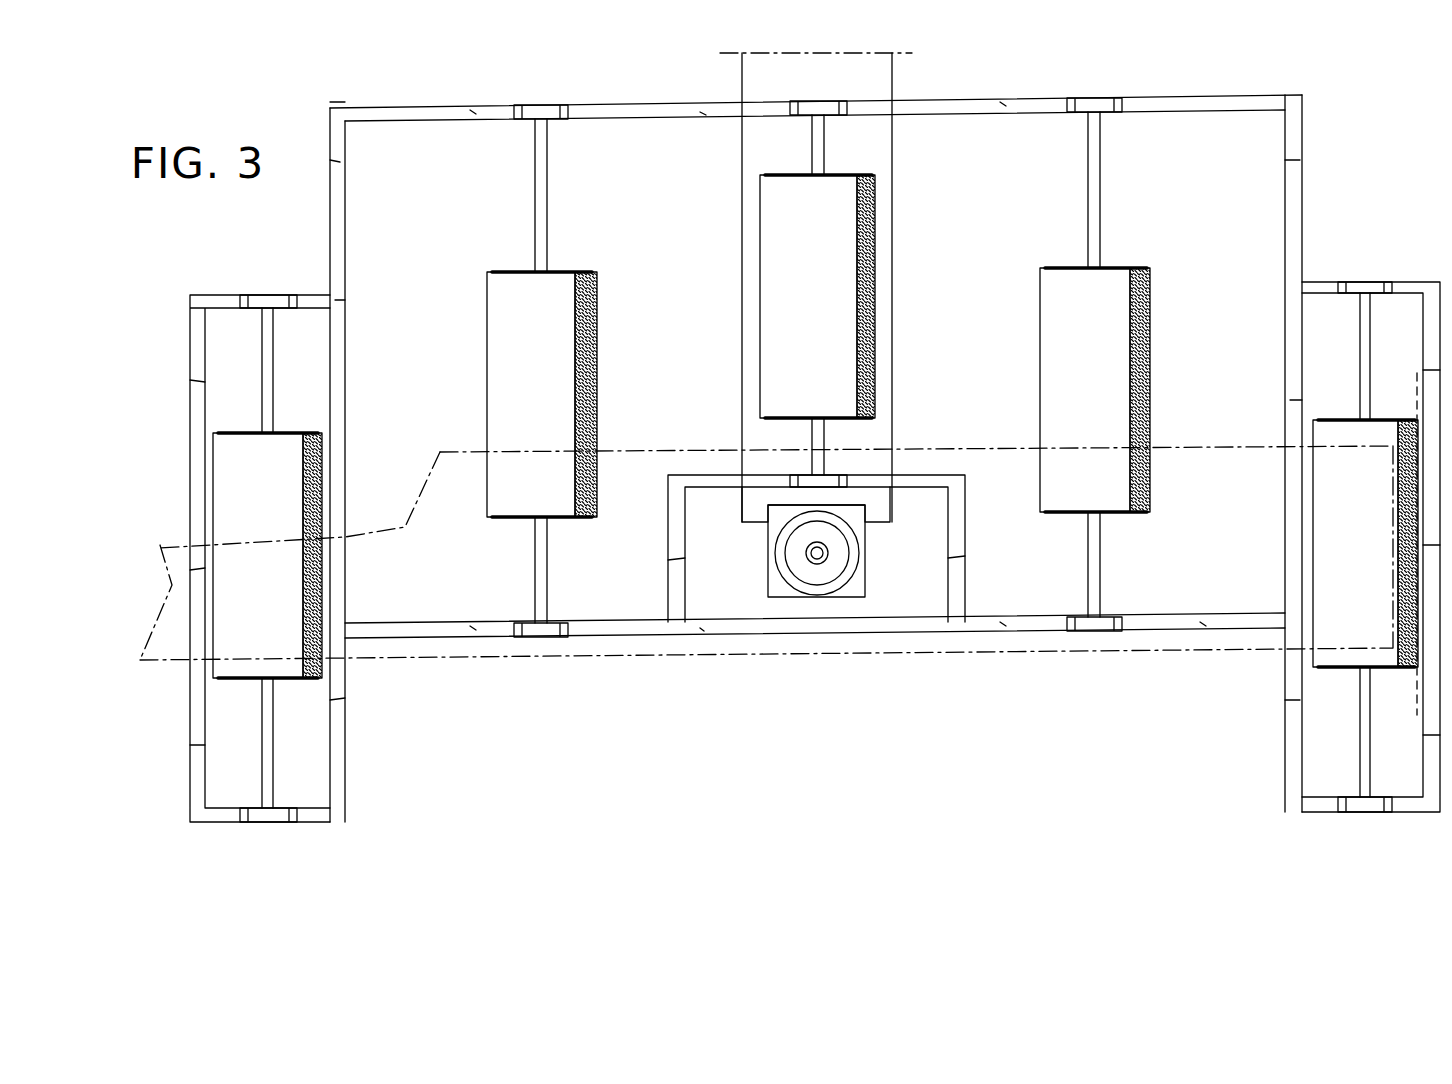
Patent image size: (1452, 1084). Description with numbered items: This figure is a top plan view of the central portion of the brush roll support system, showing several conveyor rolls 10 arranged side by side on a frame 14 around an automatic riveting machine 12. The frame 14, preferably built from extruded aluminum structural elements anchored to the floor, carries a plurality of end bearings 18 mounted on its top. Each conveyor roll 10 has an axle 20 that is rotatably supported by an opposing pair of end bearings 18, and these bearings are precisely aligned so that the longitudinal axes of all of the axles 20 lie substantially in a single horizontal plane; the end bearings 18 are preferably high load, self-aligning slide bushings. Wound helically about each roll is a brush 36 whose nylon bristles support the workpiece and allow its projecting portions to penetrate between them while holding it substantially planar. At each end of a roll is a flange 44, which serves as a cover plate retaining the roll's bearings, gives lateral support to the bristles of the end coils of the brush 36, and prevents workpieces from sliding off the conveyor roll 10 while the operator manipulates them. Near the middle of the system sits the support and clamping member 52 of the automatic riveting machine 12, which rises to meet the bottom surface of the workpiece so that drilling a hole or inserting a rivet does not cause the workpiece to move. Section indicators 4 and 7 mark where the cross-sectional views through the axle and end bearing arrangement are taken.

The conveyor roll 10 is at (875, 280).
The automatic riveting machine 12 is at (893, 425).
The frame 14 is at (1000, 103).
The end bearing 18 is at (552, 105).
The axle 20 is at (548, 190).
The brush 36 is at (250, 538).
The flange 44 is at (503, 268).
The support and clamping member 52 is at (855, 553).
The section line 4- 4 is at (590, 698).
The section line 7- 7 is at (1380, 712).